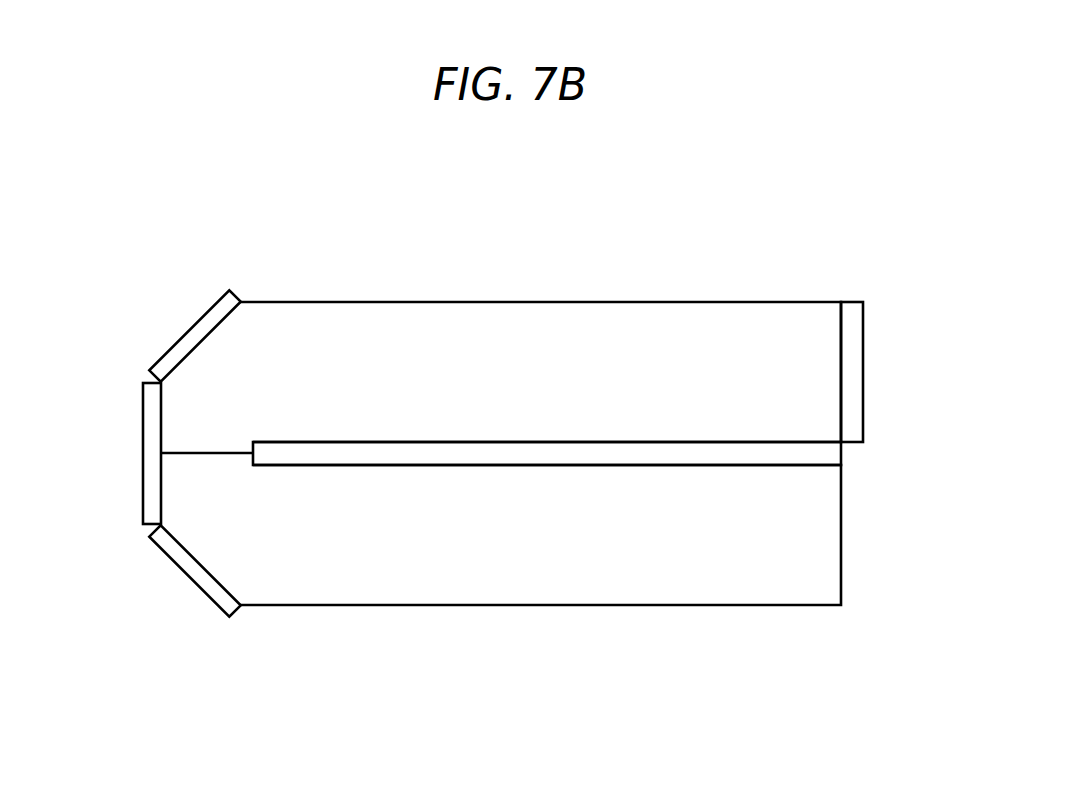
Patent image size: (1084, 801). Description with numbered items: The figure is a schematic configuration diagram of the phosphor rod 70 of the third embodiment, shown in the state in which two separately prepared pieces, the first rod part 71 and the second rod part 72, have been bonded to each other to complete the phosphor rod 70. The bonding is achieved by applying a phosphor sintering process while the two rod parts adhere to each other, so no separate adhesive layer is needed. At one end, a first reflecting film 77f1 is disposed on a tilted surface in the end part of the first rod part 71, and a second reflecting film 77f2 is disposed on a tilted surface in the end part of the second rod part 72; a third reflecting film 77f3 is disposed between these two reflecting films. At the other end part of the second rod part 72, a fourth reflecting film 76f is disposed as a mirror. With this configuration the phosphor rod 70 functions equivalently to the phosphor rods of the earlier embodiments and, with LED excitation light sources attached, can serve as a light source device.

The phosphor rod 70 is at (864, 187).
The first rod part 71 is at (388, 595).
The second rod part 72 is at (388, 313).
The fourth reflecting film 76f is at (858, 345).
The first reflecting film 77f1 is at (177, 555).
The second reflecting film 77f2 is at (180, 355).
The third reflecting film 77f3 is at (145, 450).